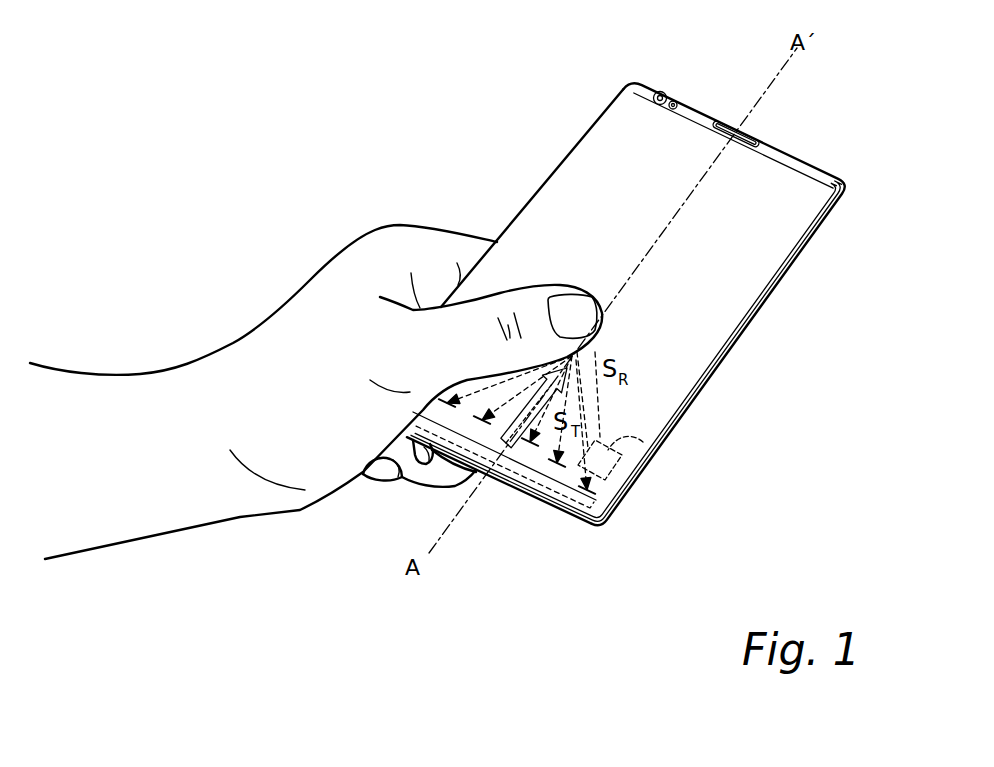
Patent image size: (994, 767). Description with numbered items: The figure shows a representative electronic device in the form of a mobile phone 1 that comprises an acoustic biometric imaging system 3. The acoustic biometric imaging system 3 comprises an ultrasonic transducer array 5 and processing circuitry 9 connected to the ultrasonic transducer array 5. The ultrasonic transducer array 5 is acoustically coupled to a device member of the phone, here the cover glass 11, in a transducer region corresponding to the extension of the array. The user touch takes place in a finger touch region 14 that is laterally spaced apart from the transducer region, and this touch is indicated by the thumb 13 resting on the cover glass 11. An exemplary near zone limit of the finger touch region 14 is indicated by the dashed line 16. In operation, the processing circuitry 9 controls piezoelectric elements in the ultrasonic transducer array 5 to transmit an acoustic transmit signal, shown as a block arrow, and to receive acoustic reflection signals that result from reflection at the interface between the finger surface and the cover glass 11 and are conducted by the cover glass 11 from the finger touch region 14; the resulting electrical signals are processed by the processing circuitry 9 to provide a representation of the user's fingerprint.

The mobile phone 1 is at (832, 292).
The acoustic biometric imaging system 3 is at (622, 463).
The ultrasonic transducer array 5 is at (545, 500).
The processing circuitry 9 is at (643, 442).
The cover glass 11 is at (540, 207).
The thumb 13 is at (562, 292).
The finger touch region 14 is at (707, 333).
The dashed line 16 is at (595, 495).